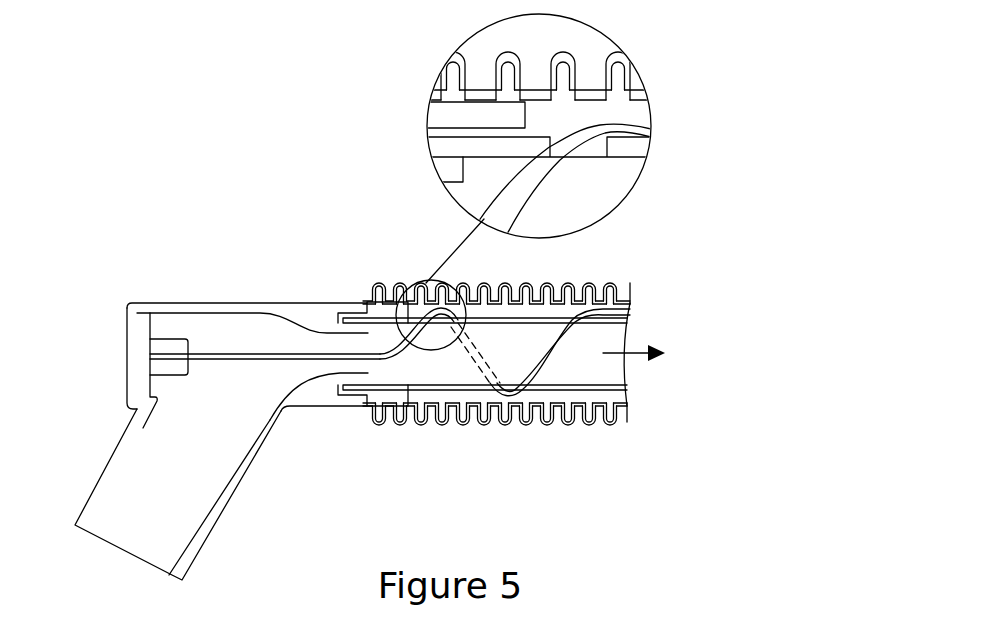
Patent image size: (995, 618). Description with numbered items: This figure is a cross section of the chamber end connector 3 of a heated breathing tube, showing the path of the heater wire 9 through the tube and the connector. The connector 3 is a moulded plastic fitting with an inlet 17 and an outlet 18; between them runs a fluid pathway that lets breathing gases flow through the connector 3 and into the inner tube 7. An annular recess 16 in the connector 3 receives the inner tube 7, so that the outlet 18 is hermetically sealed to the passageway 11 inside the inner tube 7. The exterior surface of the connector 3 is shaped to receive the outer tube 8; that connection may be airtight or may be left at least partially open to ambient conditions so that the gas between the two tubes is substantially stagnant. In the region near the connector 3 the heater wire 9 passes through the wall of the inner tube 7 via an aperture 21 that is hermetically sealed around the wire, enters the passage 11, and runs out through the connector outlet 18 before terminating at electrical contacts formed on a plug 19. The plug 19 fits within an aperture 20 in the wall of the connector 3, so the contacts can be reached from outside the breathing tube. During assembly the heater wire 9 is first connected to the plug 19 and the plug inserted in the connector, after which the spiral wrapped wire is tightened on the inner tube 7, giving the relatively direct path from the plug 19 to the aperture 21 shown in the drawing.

The chamber end connector 3 is at (218, 303).
The inner tube 7 is at (547, 320).
The outer tube 8 is at (510, 423).
The heater wire 9 is at (600, 352).
The passageway 11 is at (612, 345).
The annular recess 16 is at (378, 428).
The inlet 17 is at (150, 520).
The outlet 18 is at (348, 366).
The plug 19 is at (135, 357).
The aperture 20 is at (132, 303).
The aperture 21 is at (548, 140).